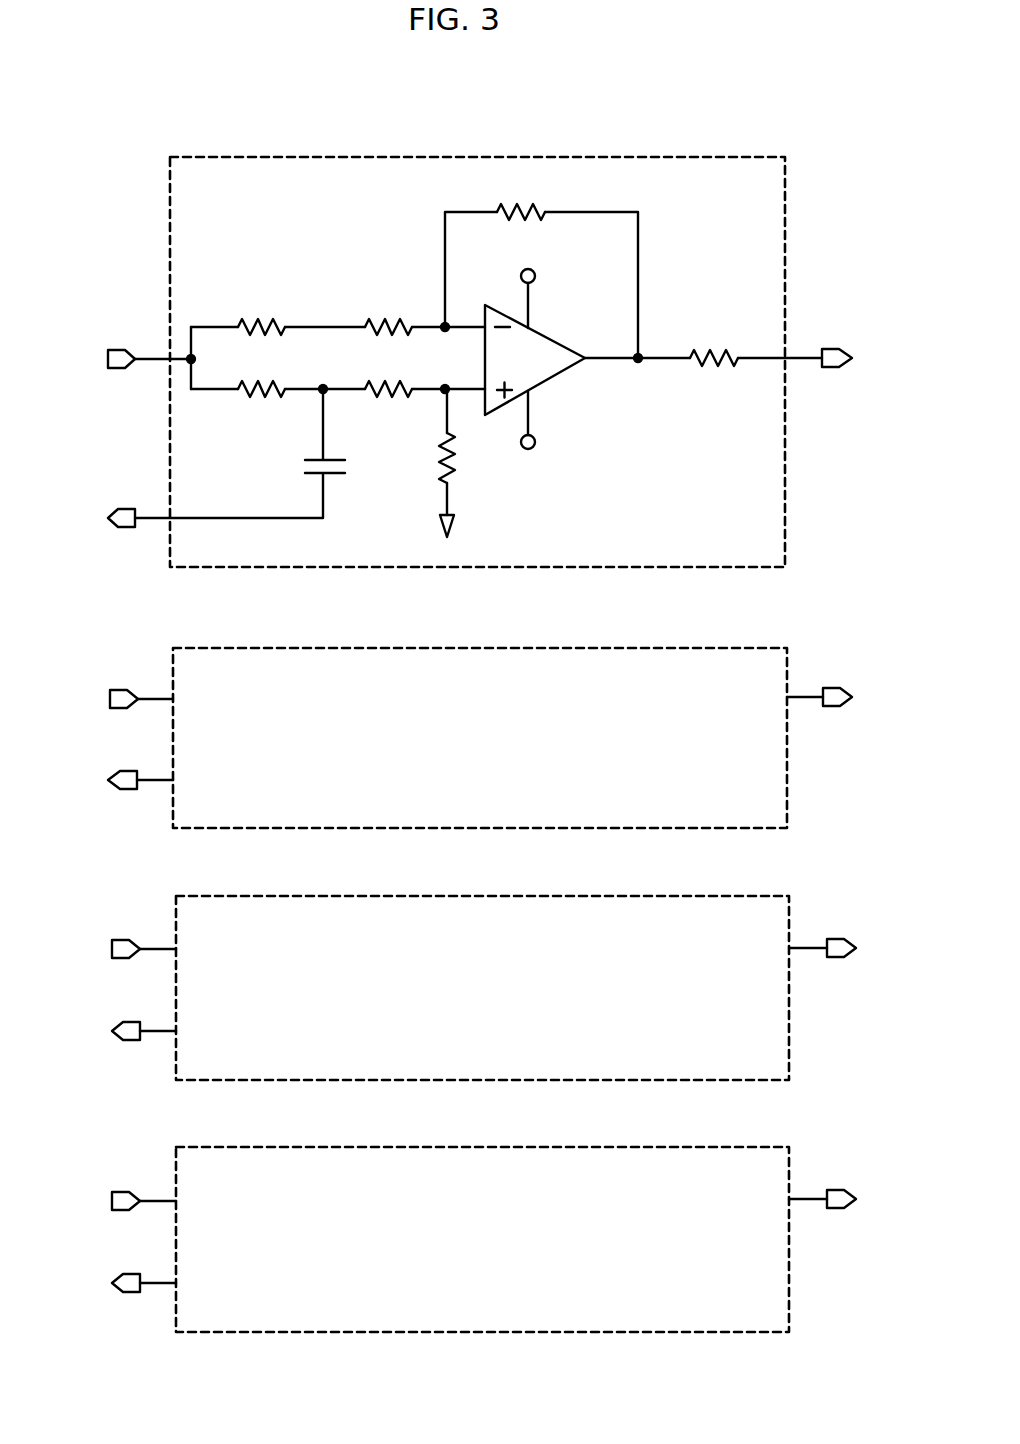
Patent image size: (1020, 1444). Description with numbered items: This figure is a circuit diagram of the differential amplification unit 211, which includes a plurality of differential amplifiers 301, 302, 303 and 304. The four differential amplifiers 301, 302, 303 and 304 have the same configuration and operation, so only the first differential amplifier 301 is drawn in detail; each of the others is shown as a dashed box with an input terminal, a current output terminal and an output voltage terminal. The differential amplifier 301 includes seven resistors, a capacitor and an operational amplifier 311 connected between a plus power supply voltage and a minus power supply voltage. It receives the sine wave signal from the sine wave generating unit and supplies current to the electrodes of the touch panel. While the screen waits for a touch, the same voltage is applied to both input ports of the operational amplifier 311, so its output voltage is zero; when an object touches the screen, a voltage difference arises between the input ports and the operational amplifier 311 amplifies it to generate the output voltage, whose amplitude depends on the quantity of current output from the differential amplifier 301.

The differential amplification unit 211 is at (132, 148).
The differential amplifier 301 is at (690, 155).
The differential amplifier 302 is at (695, 645).
The differential amplifier 303 is at (700, 896).
The differential amplifier 304 is at (700, 1147).
The operational amplifier 311 is at (552, 335).